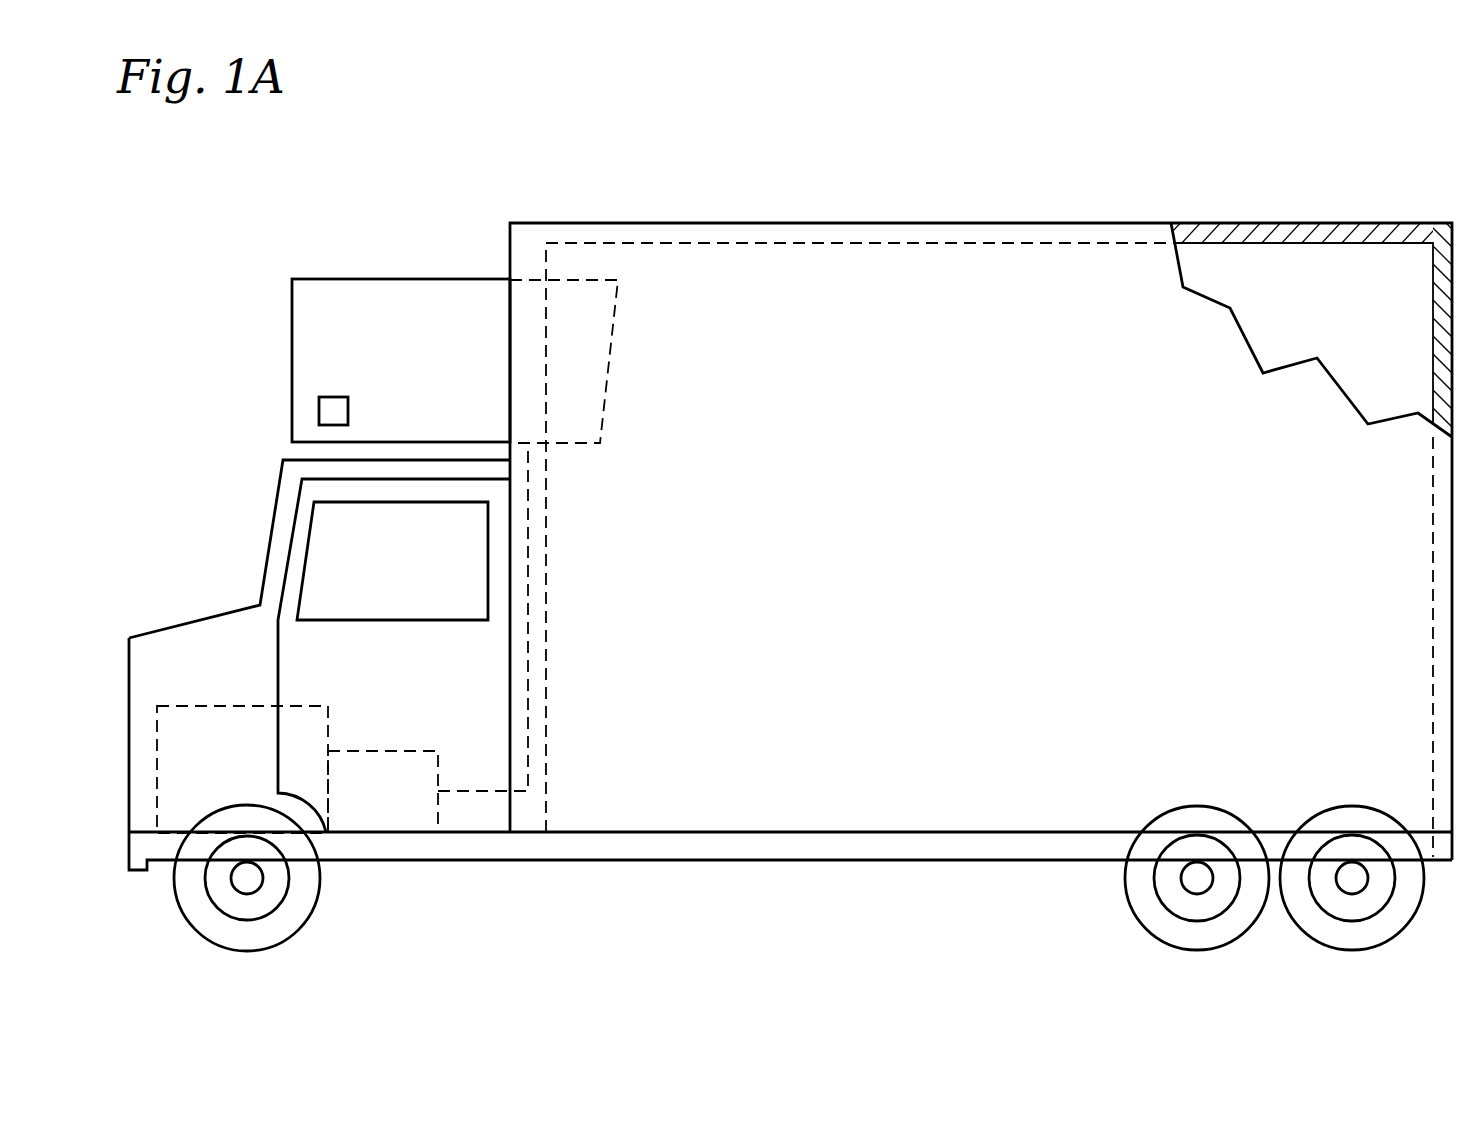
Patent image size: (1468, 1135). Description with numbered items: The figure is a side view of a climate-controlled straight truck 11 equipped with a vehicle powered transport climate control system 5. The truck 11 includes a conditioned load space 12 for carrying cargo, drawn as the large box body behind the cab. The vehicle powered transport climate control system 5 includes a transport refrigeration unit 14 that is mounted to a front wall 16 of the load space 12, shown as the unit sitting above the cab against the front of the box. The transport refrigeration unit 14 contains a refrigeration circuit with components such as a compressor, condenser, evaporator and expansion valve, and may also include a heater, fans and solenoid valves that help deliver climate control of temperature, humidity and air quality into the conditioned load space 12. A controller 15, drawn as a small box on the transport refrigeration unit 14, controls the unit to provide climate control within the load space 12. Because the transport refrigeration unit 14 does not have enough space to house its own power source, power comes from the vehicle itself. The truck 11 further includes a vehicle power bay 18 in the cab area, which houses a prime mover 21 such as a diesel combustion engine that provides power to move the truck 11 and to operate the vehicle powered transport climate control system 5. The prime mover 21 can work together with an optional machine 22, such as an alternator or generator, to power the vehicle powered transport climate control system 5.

The vehicle powered transport climate control system 5 is at (804, 136).
The climate-controlled straight truck 11 is at (1056, 164).
The conditioned load space 12 is at (1257, 277).
The transport refrigeration unit 14 is at (373, 279).
The controller 15 is at (319, 408).
The front wall 16 is at (547, 303).
The vehicle power bay 18 is at (224, 610).
The prime mover 21 is at (185, 705).
The machine 22 is at (405, 750).